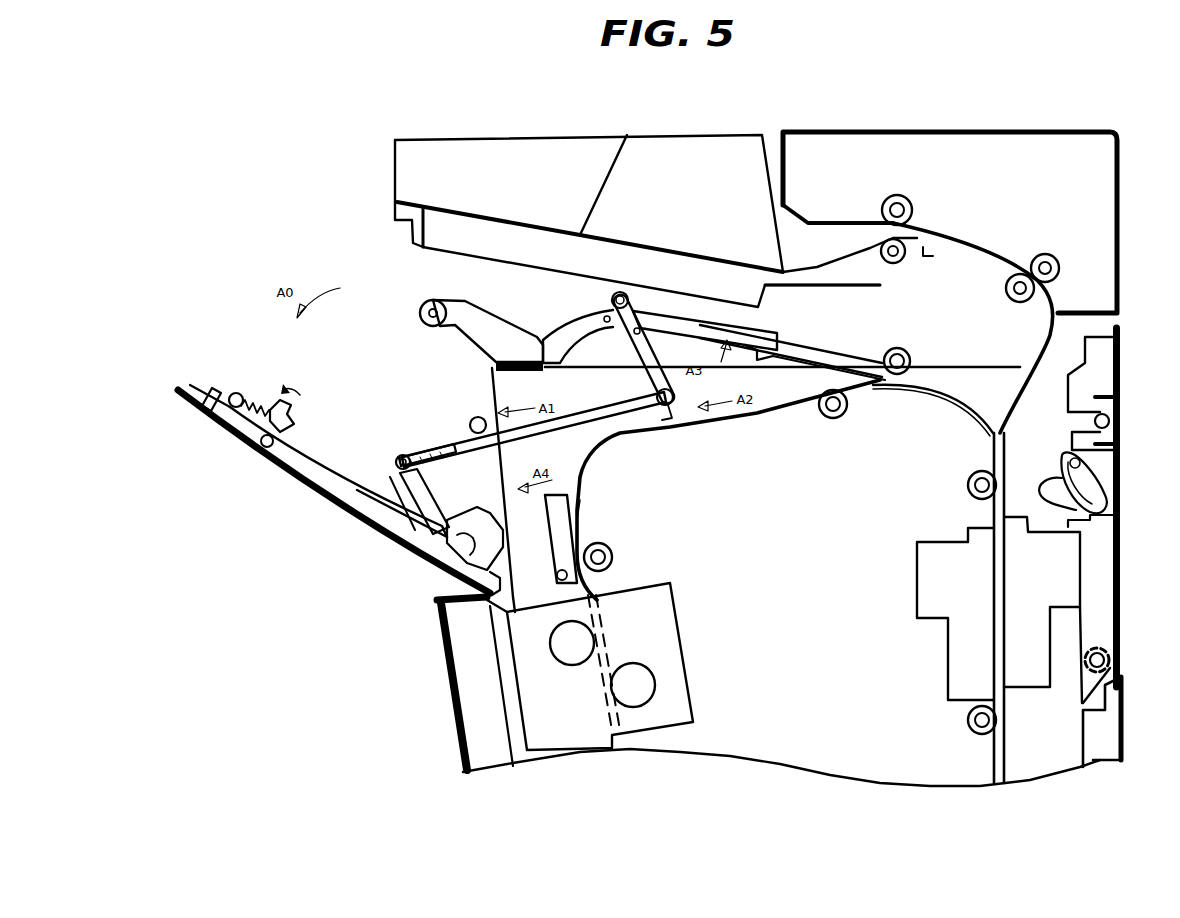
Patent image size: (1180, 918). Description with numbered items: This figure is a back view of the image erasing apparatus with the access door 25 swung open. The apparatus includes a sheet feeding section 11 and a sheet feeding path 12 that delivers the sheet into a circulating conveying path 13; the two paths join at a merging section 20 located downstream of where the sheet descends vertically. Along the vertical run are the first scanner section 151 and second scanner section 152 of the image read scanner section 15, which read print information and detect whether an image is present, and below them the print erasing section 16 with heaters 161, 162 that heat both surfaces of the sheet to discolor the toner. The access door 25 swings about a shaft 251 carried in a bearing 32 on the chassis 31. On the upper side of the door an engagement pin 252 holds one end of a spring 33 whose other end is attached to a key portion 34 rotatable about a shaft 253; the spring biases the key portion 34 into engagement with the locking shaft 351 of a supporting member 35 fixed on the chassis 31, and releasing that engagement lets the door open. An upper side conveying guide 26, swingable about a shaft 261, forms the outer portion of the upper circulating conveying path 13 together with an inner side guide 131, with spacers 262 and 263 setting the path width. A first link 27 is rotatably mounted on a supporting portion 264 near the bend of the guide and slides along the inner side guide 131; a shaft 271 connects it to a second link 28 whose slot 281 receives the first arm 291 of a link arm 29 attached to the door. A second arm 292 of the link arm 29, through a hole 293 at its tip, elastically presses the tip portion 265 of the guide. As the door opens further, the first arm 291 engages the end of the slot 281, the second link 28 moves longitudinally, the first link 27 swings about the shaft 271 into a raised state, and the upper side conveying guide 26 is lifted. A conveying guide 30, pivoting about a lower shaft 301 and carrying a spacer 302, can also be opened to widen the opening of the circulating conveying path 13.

The sheet feeding section 11 is at (563, 152).
The sheet feeding path 12 is at (975, 240).
The circulating conveying path 13 is at (970, 372).
The image read scanner section 15 is at (921, 646).
The print erasing section 16 is at (664, 752).
The merging section 20 is at (987, 452).
The access door 25 is at (300, 497).
The upper side conveying guide 26 is at (845, 345).
The first link 27 is at (633, 298).
The second link 28 is at (640, 410).
The link arm 29 is at (345, 500).
The conveying guide 30 is at (592, 530).
The chassis 31 is at (490, 370).
The bearing 32 is at (455, 585).
The spring 33 is at (282, 398).
The key portion 34 is at (262, 465).
The supporting member 35 is at (457, 300).
The inner side guide 131 is at (927, 396).
The first scanner section 151 is at (1065, 577).
The second scanner section 152 is at (925, 597).
The heater 161 is at (665, 640).
The heater 162 is at (572, 750).
The shaft 251 is at (432, 555).
The engagement pin 252 is at (240, 392).
The shaft 253 is at (248, 440).
The shaft 261 is at (893, 342).
The spacer 262 is at (773, 380).
The spacer 263 is at (575, 328).
The supporting portion 264 is at (625, 290).
The tip portion 265 is at (540, 340).
The shaft 271 is at (670, 410).
The slot 281 is at (430, 445).
The first arm 291 is at (398, 455).
The second arm 292 is at (385, 515).
The hole 293 is at (470, 415).
The shaft 301 is at (605, 578).
The spacer 302 is at (590, 513).
The locking shaft 351 is at (423, 300).